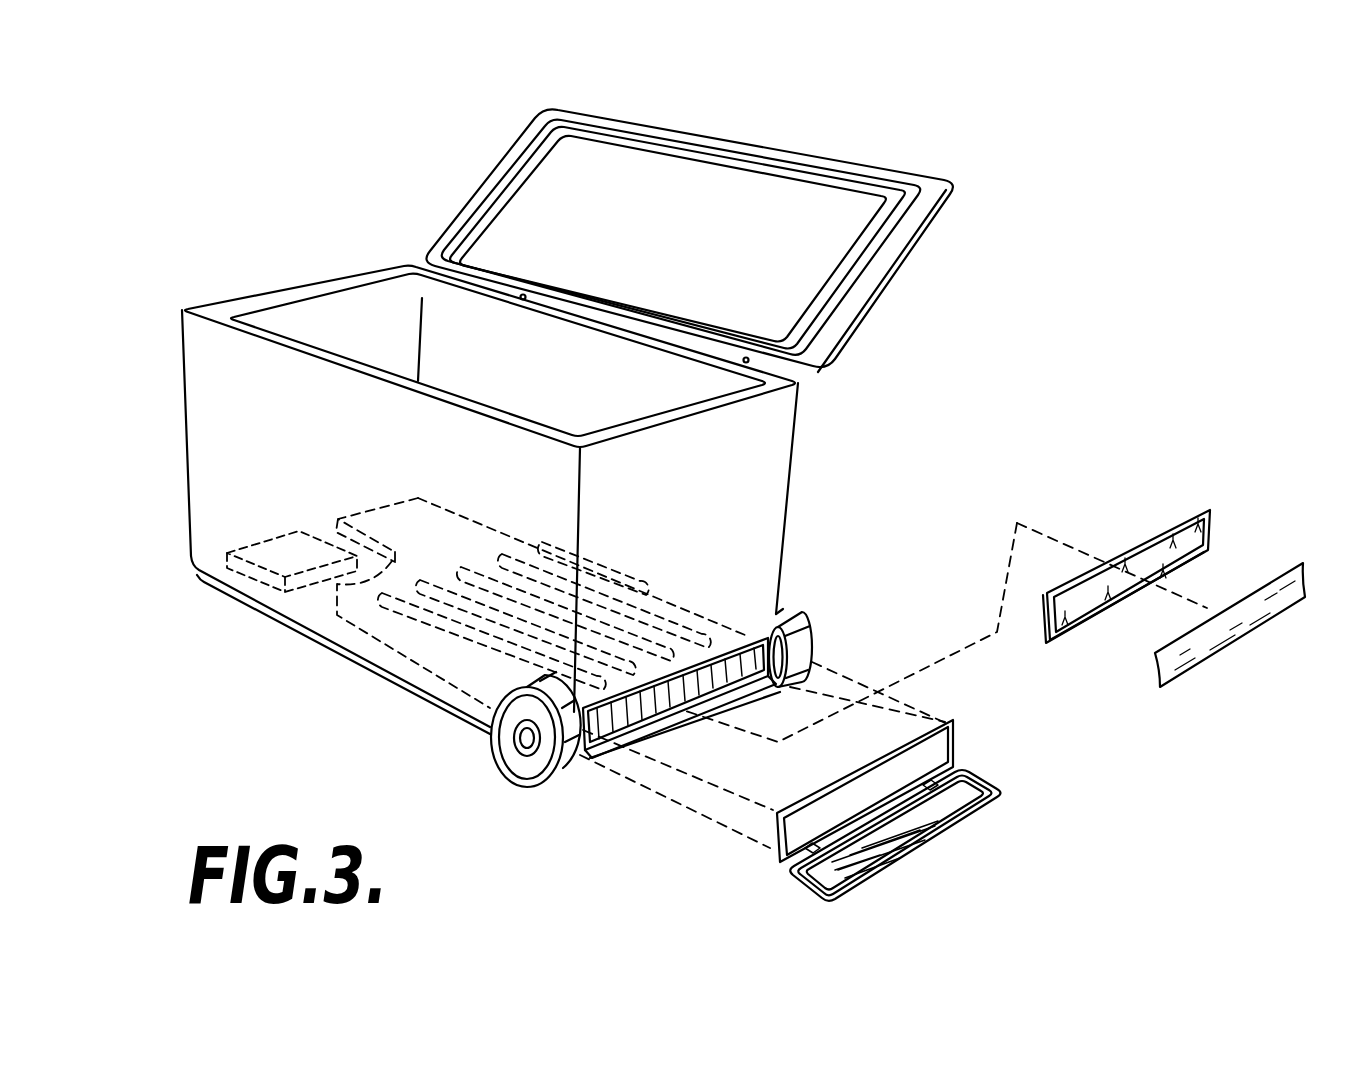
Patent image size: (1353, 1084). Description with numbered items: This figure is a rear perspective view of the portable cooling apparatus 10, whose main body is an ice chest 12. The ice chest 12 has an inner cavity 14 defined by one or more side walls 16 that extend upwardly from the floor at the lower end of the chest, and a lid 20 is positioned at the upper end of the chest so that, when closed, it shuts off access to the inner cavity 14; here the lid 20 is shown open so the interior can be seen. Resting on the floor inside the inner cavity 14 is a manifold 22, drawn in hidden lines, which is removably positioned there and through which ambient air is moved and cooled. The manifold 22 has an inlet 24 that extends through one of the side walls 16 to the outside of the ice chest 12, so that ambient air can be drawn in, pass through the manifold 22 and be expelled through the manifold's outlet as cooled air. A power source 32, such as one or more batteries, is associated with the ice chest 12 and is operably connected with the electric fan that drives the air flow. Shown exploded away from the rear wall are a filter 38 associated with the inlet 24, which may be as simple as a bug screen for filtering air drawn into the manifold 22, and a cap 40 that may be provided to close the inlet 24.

The portable cooling apparatus 10 is at (1072, 172).
The ice chest 12 is at (788, 525).
The inner cavity 14 is at (393, 343).
The side walls 16 is at (232, 418).
The lid 20 is at (606, 201).
The manifold 22 is at (457, 665).
The inlet 24 is at (681, 729).
The power source 32 is at (270, 580).
The filter 38 is at (1247, 587).
The cap 40 is at (1005, 797).